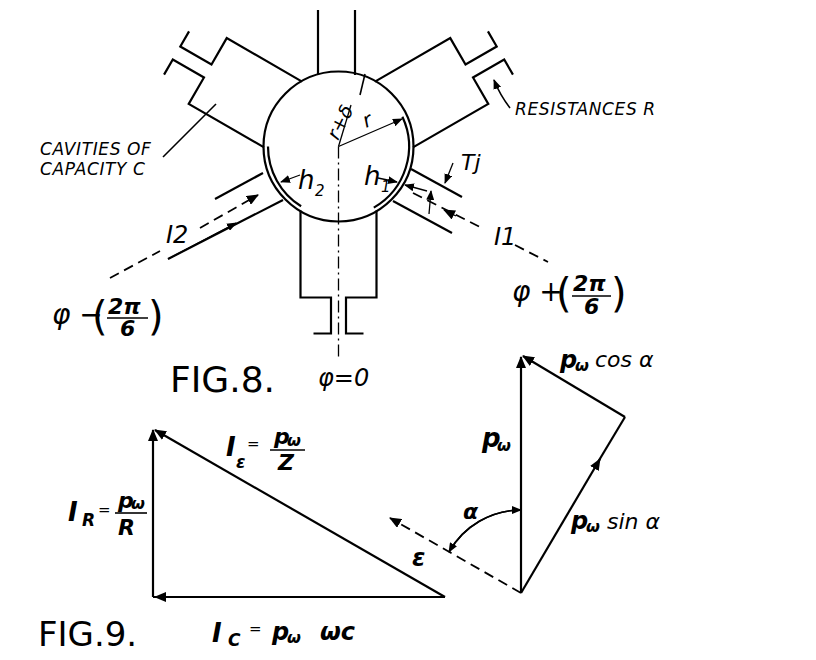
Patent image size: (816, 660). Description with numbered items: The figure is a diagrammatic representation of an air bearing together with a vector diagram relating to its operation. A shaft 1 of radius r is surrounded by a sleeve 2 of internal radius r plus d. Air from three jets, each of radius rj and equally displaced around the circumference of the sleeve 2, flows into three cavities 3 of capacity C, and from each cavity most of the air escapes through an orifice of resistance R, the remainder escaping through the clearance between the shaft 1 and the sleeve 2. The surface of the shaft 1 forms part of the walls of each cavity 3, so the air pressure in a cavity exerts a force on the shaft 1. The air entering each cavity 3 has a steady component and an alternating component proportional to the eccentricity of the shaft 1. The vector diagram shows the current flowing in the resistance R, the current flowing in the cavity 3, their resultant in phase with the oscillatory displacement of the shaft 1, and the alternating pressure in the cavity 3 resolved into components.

The shaft 1 is at (303, 98).
The sleeve 2 is at (389, 208).
The cavities 3 is at (243, 104).